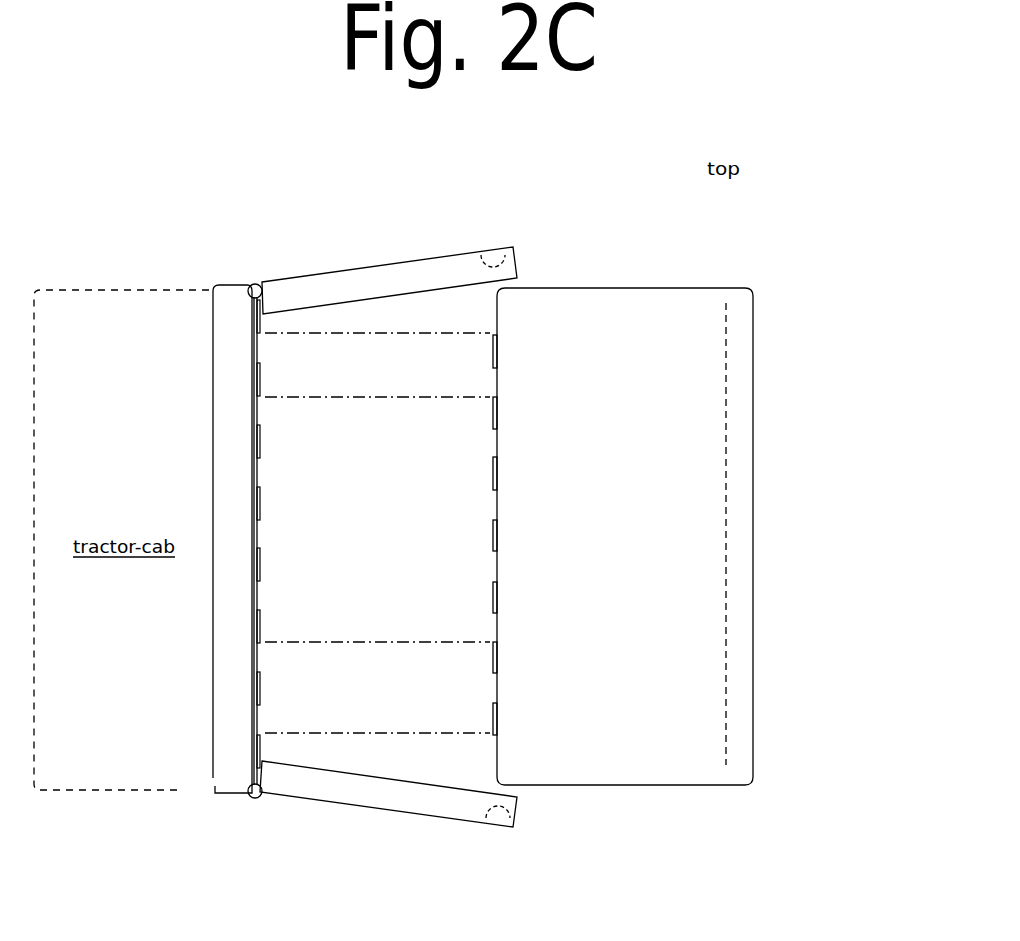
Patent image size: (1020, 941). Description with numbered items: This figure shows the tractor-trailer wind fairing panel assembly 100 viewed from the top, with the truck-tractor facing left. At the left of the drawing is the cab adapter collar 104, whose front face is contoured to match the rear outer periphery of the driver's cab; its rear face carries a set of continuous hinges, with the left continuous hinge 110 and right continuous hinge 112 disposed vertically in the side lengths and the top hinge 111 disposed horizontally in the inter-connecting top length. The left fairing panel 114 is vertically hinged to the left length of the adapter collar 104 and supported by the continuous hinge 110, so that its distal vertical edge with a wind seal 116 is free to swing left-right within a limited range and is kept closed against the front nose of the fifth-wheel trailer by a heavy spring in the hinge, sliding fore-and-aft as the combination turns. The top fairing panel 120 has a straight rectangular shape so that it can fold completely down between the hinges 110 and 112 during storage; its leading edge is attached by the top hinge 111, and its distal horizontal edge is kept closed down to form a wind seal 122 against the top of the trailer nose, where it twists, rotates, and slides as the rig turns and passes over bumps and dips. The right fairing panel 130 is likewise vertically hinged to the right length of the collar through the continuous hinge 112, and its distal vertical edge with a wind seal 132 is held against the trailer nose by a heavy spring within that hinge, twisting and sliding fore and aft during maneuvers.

The tractor-trailer wind fairing panel assembly 100 is at (227, 222).
The cab adapter collar 104 is at (222, 778).
The left continuous hinge 110 is at (255, 797).
The top continuous hinge 111 is at (487, 475).
The right continuous hinge 112 is at (258, 283).
The left fairing panel 114 is at (343, 803).
The wind seal 116 is at (500, 816).
The top fairing panel 120 is at (710, 535).
The wind seal 122 is at (747, 682).
The right fairing panel 130 is at (328, 268).
The wind seal 132 is at (487, 250).